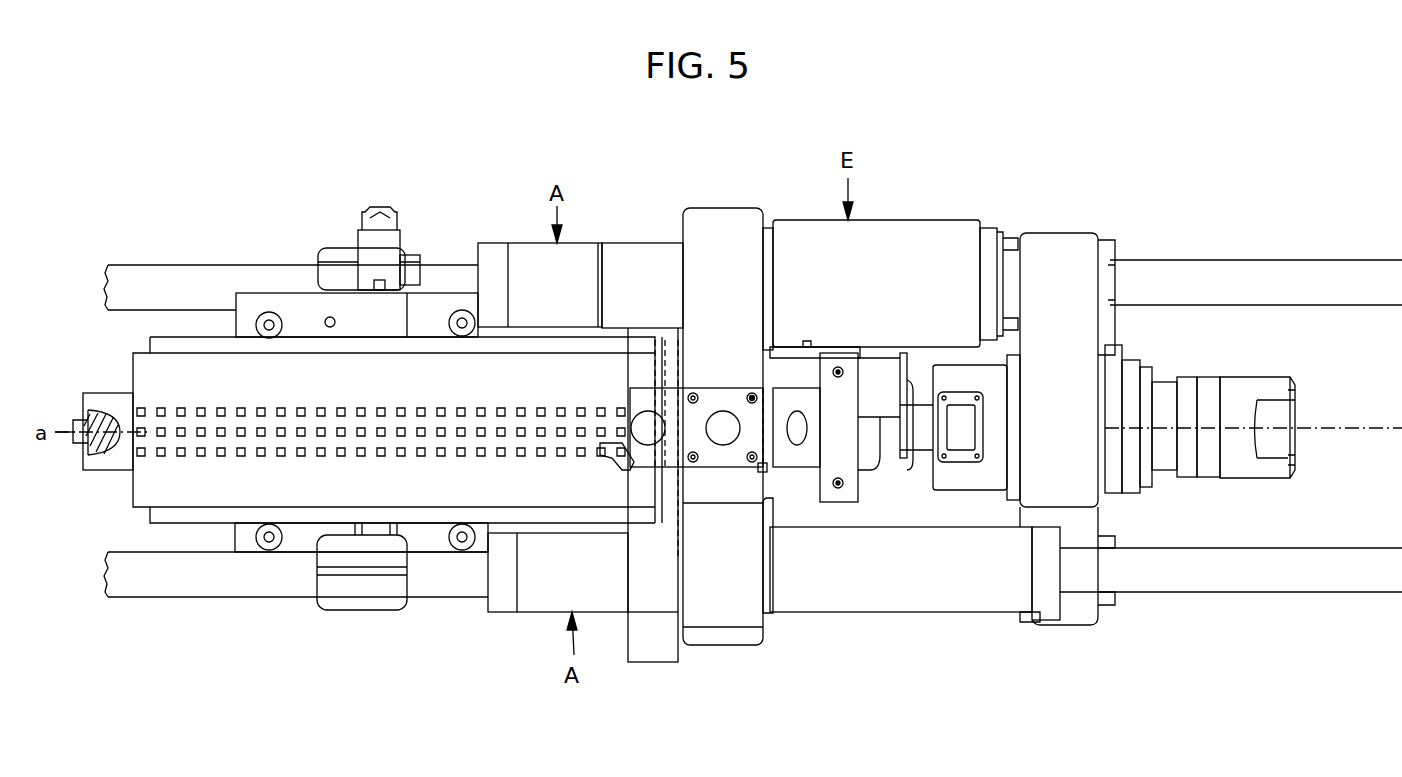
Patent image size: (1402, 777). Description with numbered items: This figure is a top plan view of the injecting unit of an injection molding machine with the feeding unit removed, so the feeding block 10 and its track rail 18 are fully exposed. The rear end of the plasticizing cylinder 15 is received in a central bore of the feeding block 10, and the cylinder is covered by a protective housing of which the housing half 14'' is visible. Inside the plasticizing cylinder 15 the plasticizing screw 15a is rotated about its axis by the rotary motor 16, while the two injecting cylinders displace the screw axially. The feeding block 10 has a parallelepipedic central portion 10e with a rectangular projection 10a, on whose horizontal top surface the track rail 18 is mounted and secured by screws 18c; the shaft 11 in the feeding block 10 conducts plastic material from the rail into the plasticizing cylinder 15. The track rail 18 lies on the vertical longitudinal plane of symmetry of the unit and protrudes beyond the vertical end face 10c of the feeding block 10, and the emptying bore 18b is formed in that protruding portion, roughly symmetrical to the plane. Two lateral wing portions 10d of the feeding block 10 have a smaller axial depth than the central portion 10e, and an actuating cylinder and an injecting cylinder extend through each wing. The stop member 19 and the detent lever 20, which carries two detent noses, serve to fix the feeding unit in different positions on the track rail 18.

The feeding block 10 is at (740, 647).
The projection 10a is at (800, 400).
The vertical end face 10c is at (680, 300).
The lateral wing portions 10d is at (708, 593).
The parallelepipedic central portion 10e is at (814, 360).
The shaft 11 is at (723, 440).
The housing half 14'' is at (397, 430).
The plasticizing cylinder 15 is at (108, 398).
The plasticizing screw 15a is at (100, 470).
The rotary motor 16 is at (1300, 403).
The track rail 18 is at (712, 400).
The emptying bore 18b is at (640, 395).
The screws 18c is at (752, 393).
The stop member 19 is at (765, 472).
The detent lever 20 is at (600, 460).